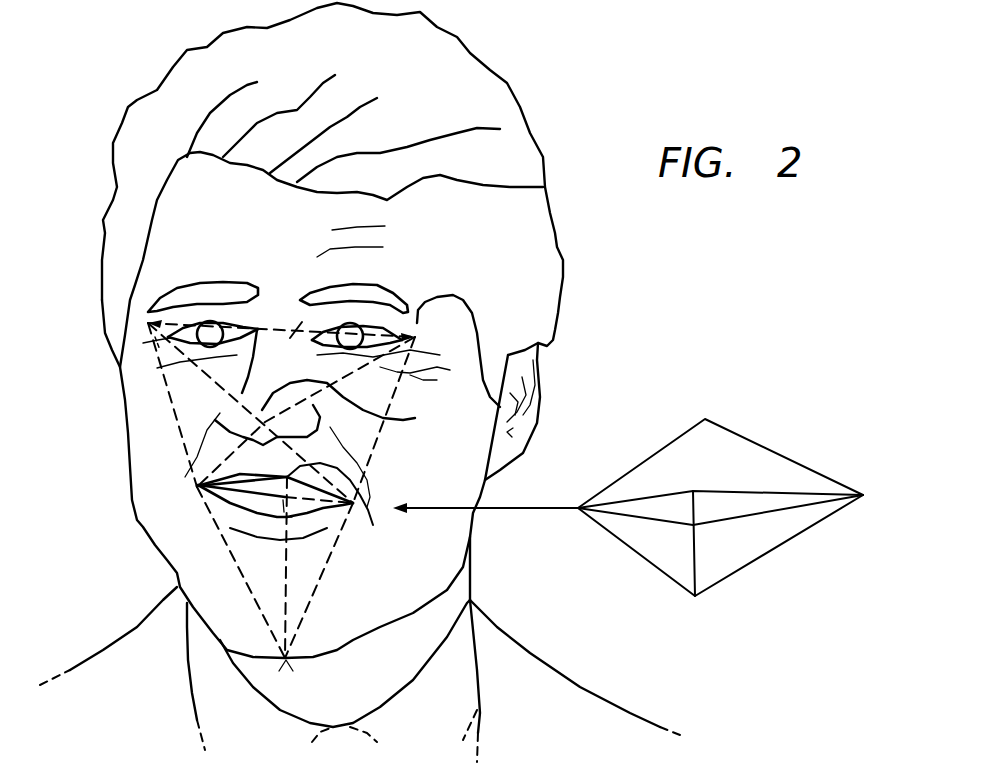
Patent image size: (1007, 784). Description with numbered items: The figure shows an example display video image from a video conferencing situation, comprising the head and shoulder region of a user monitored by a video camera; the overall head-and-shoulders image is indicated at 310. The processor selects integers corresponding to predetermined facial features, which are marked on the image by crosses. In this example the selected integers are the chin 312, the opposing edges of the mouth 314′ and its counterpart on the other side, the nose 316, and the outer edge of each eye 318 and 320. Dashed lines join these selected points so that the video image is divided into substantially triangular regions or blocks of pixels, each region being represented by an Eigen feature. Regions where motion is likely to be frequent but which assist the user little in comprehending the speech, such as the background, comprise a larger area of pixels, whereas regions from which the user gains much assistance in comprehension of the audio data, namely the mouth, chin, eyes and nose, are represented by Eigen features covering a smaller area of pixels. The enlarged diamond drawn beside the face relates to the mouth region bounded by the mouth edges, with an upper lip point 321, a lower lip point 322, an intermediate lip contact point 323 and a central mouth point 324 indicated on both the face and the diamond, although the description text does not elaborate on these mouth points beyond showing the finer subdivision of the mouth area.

The face image 310 is at (550, 265).
The chin 312 is at (291, 668).
The edge of the mouth 314′ is at (197, 485).
The nose 316 is at (335, 387).
The outer edge of eye 318 is at (462, 297).
The outer edge of eye 320 is at (147, 325).
The upper lip top point 321 is at (366, 480).
The lower lip bottom point 322 is at (288, 518).
The lip contact point 323 is at (280, 500).
The mouth center point 324 is at (230, 503).